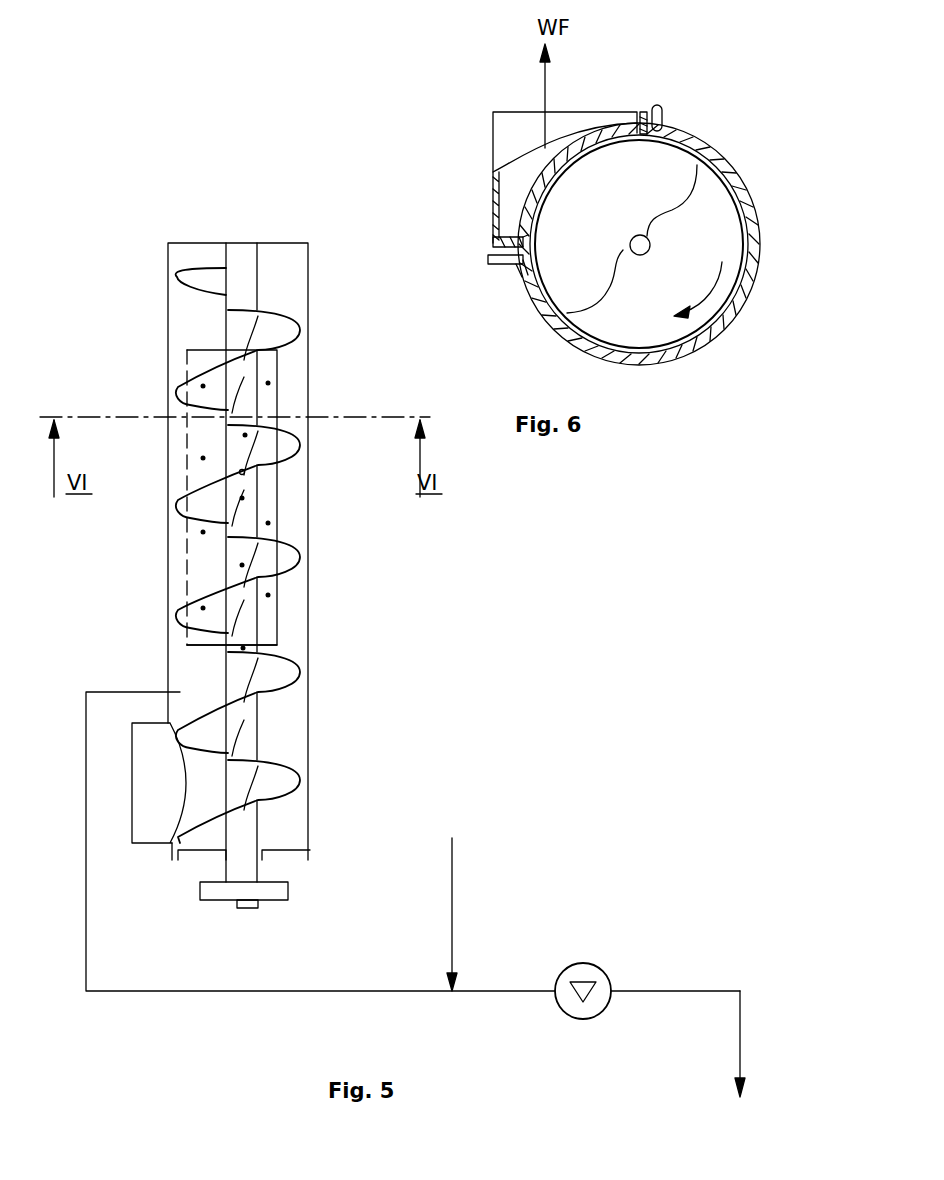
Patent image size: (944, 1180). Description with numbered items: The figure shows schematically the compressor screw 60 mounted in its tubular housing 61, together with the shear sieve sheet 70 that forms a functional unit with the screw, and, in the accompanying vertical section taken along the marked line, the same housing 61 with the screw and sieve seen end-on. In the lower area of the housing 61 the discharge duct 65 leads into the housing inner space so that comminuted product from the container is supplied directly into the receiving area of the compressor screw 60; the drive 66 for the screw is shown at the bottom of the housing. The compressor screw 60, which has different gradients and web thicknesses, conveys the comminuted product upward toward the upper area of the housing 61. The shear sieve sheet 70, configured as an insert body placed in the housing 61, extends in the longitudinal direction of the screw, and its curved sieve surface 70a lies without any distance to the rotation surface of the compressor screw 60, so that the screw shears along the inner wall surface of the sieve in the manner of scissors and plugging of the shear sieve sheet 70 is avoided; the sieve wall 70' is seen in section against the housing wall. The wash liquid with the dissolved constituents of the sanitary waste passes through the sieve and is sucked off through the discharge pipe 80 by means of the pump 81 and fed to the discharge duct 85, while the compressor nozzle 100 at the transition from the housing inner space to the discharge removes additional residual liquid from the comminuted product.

In FIG. 5, the compressor screw 60 is at (308, 702).
In FIG. 6, the compressor screw 60 is at (703, 227).
In FIG. 5, the housing 61 is at (308, 370).
In FIG. 6, the housing 61 is at (762, 278).
In FIG. 5, the discharge duct 65 is at (162, 778).
In FIG. 5, the drive 66 is at (248, 890).
In FIG. 5, the shear sieve sheet 70 is at (290, 500).
In FIG. 6, the shear sieve sheet 70 is at (579, 129).
In FIG. 5, the sieve wall 70' is at (327, 495).
In FIG. 6, the sieve wall 70' is at (456, 217).
In FIG. 5, the curved sieve surface 70a is at (222, 618).
In FIG. 6, the curved sieve surface 70a is at (552, 163).
In FIG. 5, the discharge pipe 80 is at (452, 898).
In FIG. 5, the pump 81 is at (592, 1017).
In FIG. 5, the discharge duct 85 is at (736, 1060).
In FIG. 5, the compressor nozzle 100 is at (460, 902).